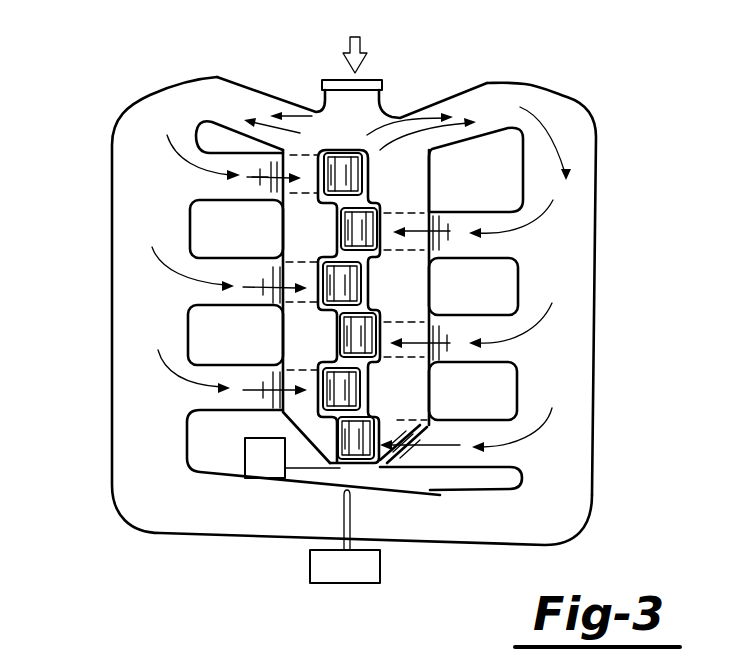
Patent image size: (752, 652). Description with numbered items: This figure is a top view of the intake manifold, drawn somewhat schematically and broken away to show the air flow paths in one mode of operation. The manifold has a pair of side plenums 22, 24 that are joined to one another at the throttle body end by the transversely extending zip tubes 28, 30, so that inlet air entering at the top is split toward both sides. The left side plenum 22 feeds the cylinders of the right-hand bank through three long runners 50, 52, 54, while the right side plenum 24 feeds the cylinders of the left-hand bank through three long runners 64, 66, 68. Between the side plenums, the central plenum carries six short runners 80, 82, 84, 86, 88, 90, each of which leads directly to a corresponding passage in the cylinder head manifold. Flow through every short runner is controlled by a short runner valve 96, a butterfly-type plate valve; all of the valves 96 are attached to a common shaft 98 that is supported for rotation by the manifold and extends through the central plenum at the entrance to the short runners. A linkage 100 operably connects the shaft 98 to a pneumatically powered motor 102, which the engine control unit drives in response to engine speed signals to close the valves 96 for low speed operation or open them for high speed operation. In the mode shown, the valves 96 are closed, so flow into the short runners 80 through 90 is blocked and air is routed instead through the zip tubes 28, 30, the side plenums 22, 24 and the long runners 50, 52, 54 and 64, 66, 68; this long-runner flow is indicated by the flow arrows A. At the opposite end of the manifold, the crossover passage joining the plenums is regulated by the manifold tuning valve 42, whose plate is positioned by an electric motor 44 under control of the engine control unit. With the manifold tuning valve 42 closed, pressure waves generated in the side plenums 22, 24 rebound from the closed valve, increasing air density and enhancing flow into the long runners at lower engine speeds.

The left side plenum 22 is at (128, 258).
The right side plenum 24 is at (582, 220).
The zip tube 28 is at (217, 93).
The zip tube 30 is at (467, 107).
The manifold tuning valve 42 is at (340, 520).
The electric motor 44 is at (320, 573).
The long runner 50 is at (185, 178).
The long runner 52 is at (172, 287).
The long runner 54 is at (182, 403).
The long runner 64 is at (512, 248).
The long runner 66 is at (510, 353).
The long runner 68 is at (513, 457).
The short runner 80 is at (324, 180).
The short runner 82 is at (343, 237).
The short runner 84 is at (327, 287).
The short runner 86 is at (340, 337).
The short runner 88 is at (322, 408).
The short runner 90 is at (367, 465).
The short runner valve 96 is at (363, 172).
The shaft 98 is at (340, 157).
The linkage 100 is at (307, 470).
The pneumatically powered motor 102 is at (253, 458).
The flow arrows A is at (157, 373).